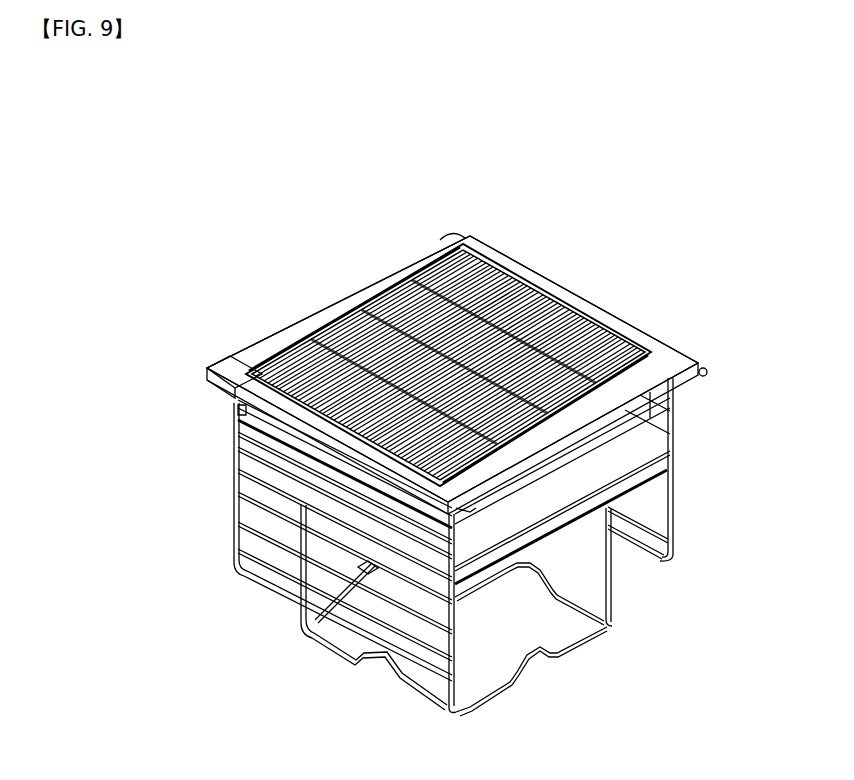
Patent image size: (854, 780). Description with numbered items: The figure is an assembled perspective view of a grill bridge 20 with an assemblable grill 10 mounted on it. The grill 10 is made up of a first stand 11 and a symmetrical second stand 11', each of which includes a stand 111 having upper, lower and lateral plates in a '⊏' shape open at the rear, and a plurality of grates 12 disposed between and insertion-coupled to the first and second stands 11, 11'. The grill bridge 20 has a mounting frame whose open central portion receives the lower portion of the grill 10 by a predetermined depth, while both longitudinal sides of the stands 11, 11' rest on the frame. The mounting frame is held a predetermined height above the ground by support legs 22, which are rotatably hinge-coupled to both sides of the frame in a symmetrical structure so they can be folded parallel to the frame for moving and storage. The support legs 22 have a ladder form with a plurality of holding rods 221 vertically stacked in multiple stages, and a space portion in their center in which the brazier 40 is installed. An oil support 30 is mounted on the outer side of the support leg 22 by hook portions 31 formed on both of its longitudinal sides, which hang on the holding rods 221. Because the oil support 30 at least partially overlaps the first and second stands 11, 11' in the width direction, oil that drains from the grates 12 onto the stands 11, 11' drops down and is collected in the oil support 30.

The assemblable grill 10 is at (526, 200).
The first stand 11 is at (452, 369).
The second stand 11' is at (219, 368).
The stand 111 is at (471, 248).
The grates 12 is at (368, 305).
The grill bridge 20 is at (215, 571).
The support legs 22 is at (237, 470).
The holding rods 221 is at (237, 497).
The oil support 30 is at (237, 432).
The hook portions 31 is at (237, 400).
The brazier 40 is at (643, 626).